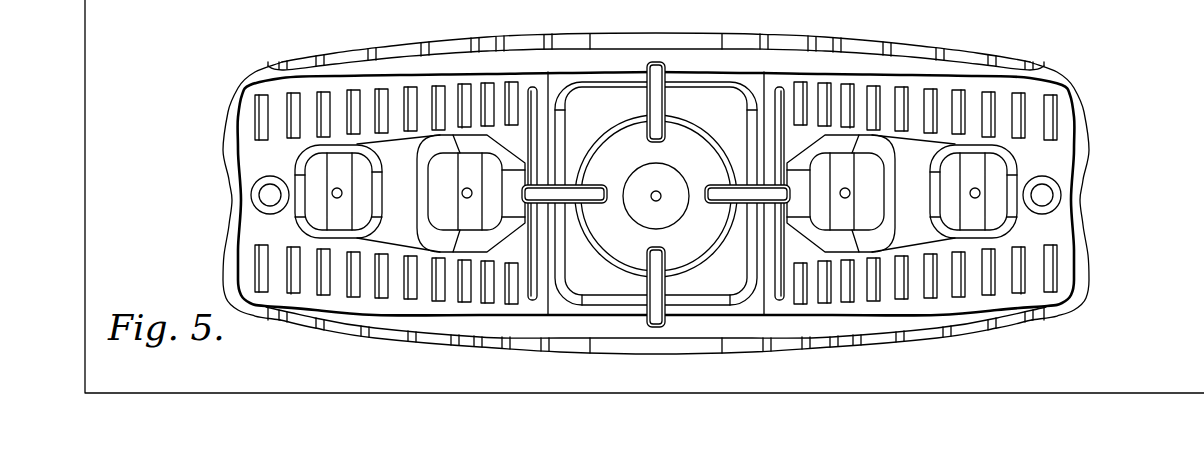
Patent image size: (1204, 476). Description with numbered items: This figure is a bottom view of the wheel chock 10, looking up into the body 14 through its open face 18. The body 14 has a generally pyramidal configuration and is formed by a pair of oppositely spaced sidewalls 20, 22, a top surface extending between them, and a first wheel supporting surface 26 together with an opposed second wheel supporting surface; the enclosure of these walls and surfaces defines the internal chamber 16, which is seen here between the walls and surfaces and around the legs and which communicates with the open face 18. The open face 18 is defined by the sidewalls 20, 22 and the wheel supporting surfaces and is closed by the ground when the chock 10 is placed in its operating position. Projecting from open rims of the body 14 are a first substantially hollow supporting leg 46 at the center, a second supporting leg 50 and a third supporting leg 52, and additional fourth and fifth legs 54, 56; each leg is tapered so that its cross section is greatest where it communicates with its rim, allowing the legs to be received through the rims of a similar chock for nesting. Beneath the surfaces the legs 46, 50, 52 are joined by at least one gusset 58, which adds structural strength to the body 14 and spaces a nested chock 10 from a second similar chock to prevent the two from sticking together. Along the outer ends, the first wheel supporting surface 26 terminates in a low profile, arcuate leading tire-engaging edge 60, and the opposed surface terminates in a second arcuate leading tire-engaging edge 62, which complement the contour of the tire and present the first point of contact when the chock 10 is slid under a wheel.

The wheel chock 10 is at (1100, 325).
The body 14 is at (1120, 165).
The internal chamber 16 is at (280, 273).
The open face 18 is at (277, 160).
The sidewall 20 is at (590, 72).
The sidewall 22 is at (700, 322).
The first wheel supporting surface 26 is at (656, 35).
The first supporting leg 46 is at (672, 168).
The second supporting leg 50 is at (467, 208).
The third supporting leg 52 is at (868, 207).
The fourth leg 54 is at (340, 213).
The fifth leg 56 is at (975, 217).
The gusset 58 is at (657, 288).
The first leading tire-engaging edge 60 is at (223, 100).
The second leading tire-engaging edge 62 is at (1090, 107).